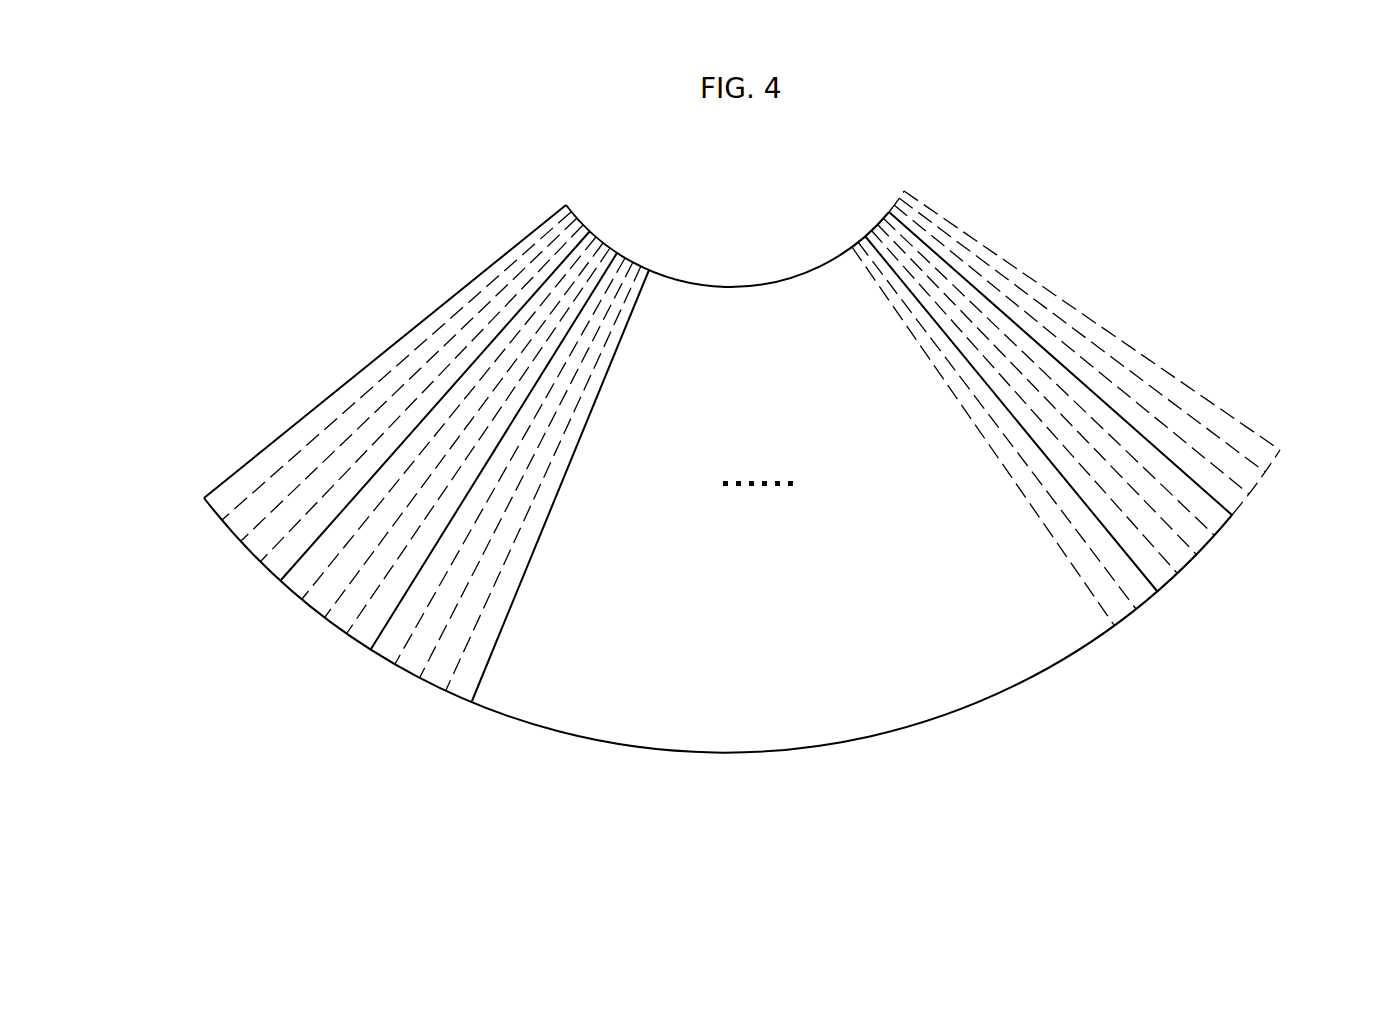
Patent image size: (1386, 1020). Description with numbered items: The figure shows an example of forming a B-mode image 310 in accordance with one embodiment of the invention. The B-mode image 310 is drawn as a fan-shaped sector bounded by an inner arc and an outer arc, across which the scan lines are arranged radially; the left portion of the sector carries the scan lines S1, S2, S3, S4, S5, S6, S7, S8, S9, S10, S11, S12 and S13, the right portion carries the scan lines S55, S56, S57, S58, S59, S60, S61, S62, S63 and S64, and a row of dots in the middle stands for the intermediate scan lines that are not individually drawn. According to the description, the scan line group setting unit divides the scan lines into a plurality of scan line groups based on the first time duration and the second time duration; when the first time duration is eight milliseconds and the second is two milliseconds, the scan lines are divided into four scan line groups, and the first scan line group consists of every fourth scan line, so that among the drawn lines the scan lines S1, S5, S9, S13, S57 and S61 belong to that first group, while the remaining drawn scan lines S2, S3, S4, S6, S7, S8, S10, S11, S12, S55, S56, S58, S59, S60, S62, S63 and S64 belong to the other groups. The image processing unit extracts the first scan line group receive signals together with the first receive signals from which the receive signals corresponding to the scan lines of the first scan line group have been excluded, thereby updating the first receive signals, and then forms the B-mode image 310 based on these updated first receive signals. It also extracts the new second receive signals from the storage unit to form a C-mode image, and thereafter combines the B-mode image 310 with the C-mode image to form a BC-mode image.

The B-mode image 310 is at (740, 209).
The scan line S1 is at (215, 489).
The scan line S2 is at (233, 510).
The scan line S3 is at (251, 531).
The scan line S4 is at (270, 551).
The scan line S5 is at (290, 570).
The scan line S6 is at (311, 588).
The scan line S7 is at (333, 605).
The scan line S8 is at (355, 622).
The scan line S9 is at (378, 637).
The scan line S10 is at (402, 652).
The scan line S11 is at (427, 665).
The scan line S12 is at (451, 677).
The scan line S13 is at (477, 688).
The scan line S55 is at (1106, 613).
The scan line S56 is at (1127, 597).
The scan line S57 is at (1148, 581).
The scan line S58 is at (1167, 563).
The scan line S59 is at (1186, 544).
The scan line S60 is at (1204, 525).
The scan line S61 is at (1221, 505).
The scan line S62 is at (1238, 485).
The scan line S63 is at (1253, 464).
The scan line S64 is at (1268, 442).